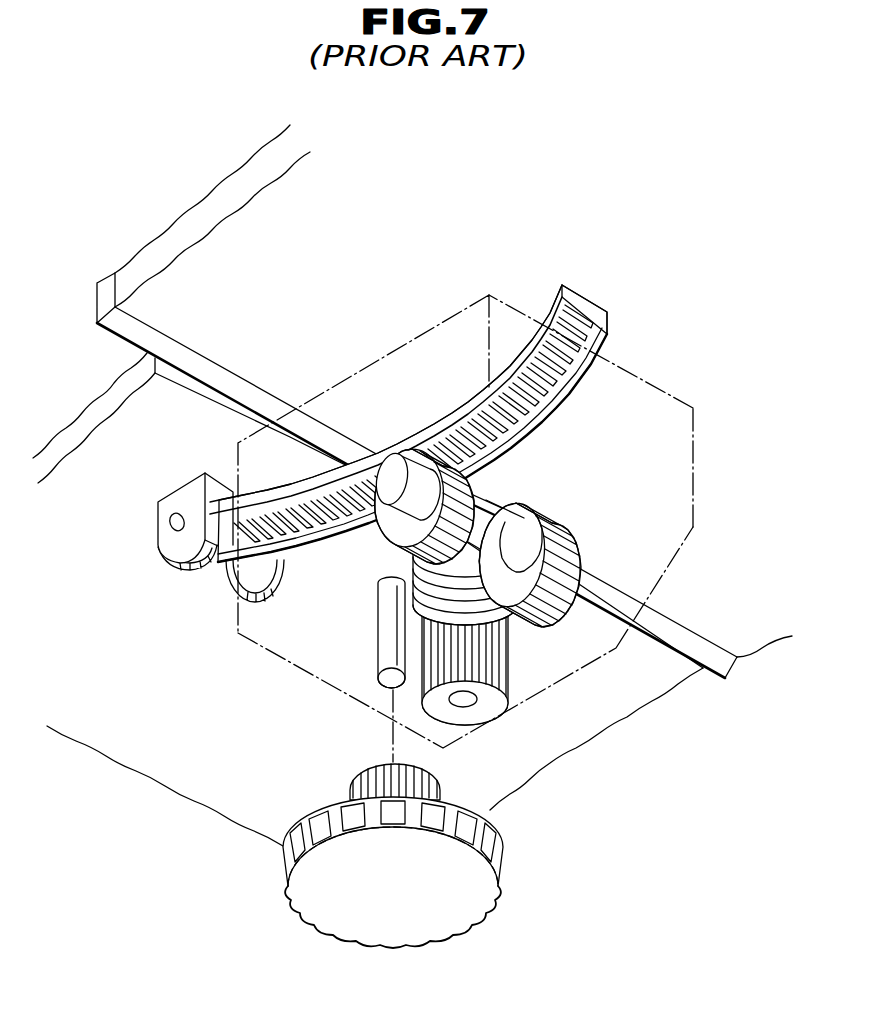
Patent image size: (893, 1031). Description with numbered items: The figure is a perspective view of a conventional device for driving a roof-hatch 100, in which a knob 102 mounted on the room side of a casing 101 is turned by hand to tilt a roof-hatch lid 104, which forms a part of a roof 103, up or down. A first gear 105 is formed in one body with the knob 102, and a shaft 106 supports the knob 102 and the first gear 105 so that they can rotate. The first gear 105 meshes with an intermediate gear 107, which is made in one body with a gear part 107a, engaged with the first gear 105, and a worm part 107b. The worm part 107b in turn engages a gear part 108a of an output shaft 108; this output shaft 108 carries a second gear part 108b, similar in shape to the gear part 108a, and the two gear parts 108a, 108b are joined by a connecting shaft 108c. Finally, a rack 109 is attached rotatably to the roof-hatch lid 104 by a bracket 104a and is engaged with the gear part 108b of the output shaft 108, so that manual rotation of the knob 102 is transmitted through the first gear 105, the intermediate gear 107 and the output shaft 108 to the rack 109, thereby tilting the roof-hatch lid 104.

The roof-hatch 100 is at (637, 376).
The casing 101 is at (400, 347).
The knob 102 is at (468, 897).
The roof 103 is at (180, 270).
The roof-hatch lid 104 is at (118, 430).
The bracket 104a is at (172, 545).
The first gear 105 is at (437, 784).
The shaft 106 is at (384, 658).
The intermediate gear 107 is at (478, 706).
The gear part 107a is at (513, 677).
The worm part 107b is at (510, 607).
The output shaft 108 is at (390, 472).
The gear part 108a is at (578, 548).
The gear part 108b is at (463, 482).
The connecting shaft 108c is at (505, 522).
The rack 109 is at (580, 303).